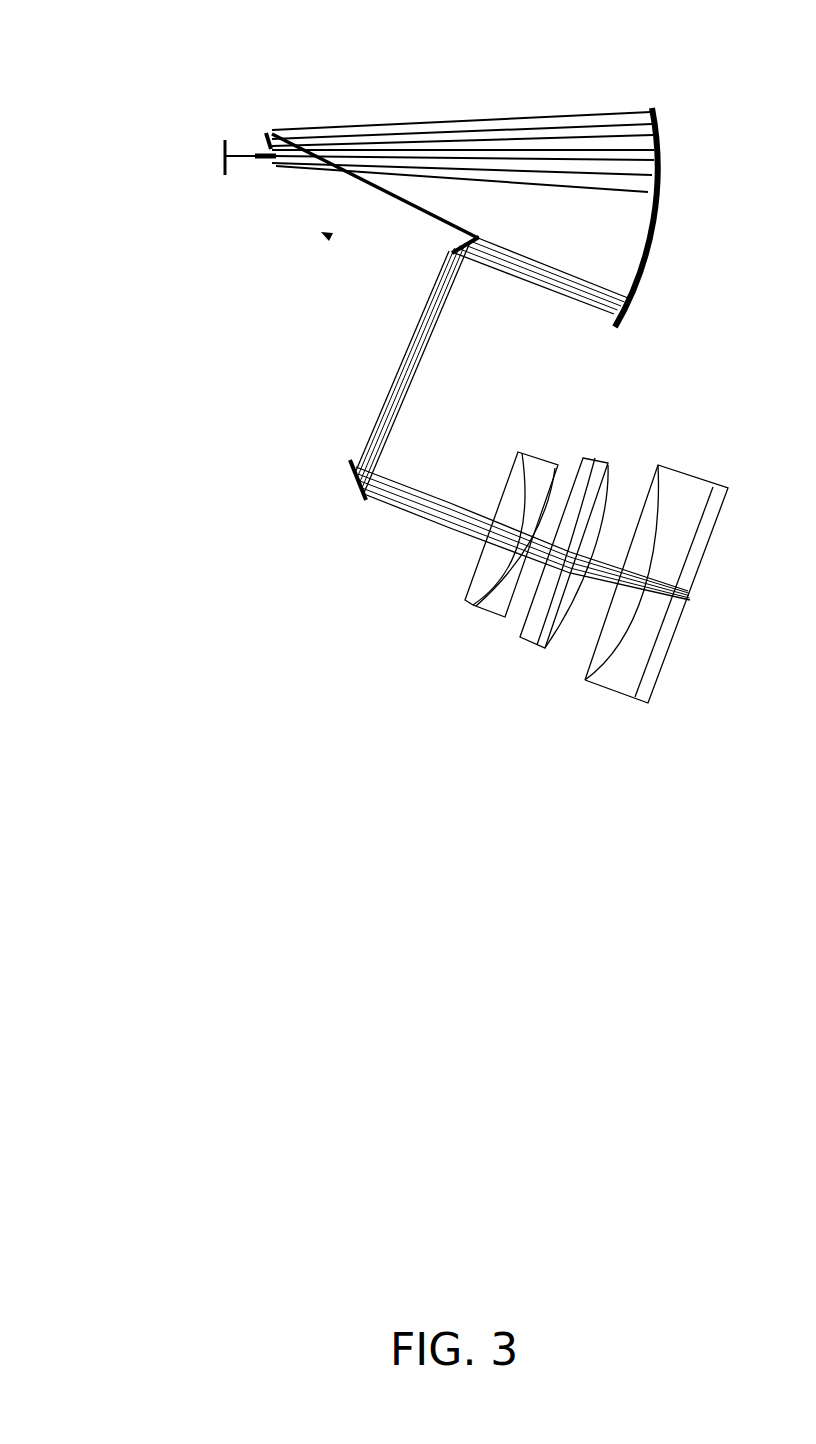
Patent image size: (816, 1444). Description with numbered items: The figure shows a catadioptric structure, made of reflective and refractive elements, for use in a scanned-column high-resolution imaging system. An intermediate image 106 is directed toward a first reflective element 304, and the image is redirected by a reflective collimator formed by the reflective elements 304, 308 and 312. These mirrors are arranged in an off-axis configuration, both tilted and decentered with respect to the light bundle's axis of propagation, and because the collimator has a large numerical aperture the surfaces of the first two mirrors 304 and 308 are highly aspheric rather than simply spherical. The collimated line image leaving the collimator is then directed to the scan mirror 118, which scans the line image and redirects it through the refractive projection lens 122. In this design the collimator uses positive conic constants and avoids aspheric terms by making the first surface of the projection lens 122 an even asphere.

The intermediate image 106 is at (202, 143).
The reflective element 308 is at (268, 132).
The first reflective element 304 is at (651, 108).
The reflective element 312 is at (445, 252).
The scan mirror 118 is at (328, 490).
The refractive projection lens 122 is at (423, 645).